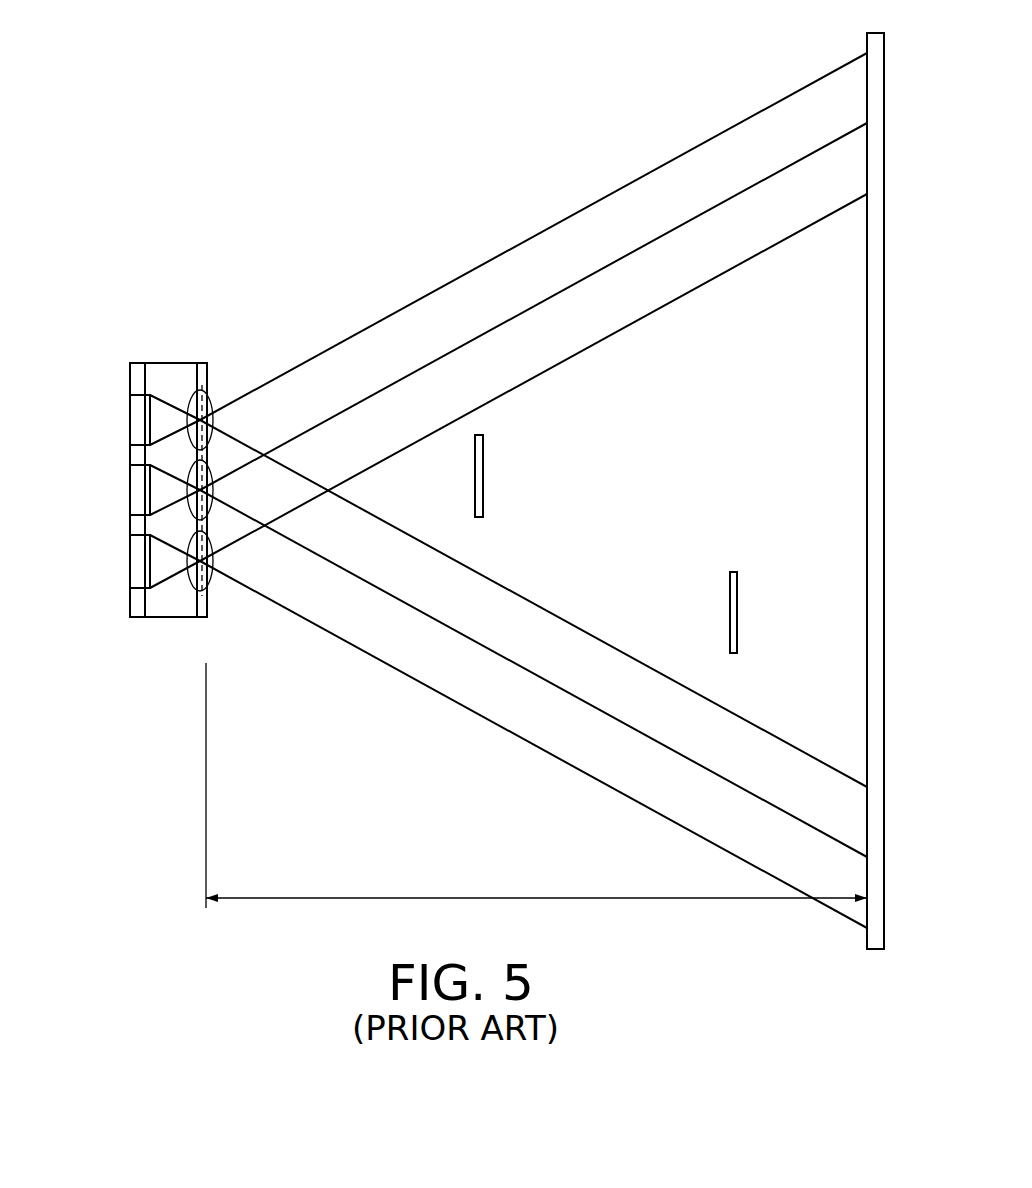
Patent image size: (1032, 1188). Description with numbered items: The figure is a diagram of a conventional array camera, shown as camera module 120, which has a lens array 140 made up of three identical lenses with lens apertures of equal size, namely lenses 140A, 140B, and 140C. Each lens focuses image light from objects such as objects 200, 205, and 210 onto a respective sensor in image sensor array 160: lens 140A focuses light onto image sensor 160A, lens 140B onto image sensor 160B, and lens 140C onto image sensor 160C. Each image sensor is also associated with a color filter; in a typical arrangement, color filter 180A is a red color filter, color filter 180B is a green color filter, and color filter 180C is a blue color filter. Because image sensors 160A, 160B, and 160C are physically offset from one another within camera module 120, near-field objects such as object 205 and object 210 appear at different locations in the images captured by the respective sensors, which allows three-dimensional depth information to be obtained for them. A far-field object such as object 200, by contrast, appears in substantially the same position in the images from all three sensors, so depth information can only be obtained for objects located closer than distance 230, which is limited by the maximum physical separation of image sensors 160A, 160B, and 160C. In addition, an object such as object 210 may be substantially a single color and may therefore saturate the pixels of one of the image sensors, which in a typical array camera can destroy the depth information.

The camera module 120 is at (170, 358).
The lens array 140 is at (202, 622).
The lens 140A is at (215, 437).
The lens 140B is at (215, 507).
The lens 140C is at (215, 577).
The image sensor array 160 is at (138, 622).
The image sensor 160A is at (135, 411).
The image sensor 160B is at (135, 481).
The image sensor 160C is at (135, 551).
The color filter 180A is at (148, 426).
The color filter 180B is at (148, 496).
The color filter 180C is at (148, 566).
The object 200 is at (867, 405).
The object 205 is at (483, 466).
The object 210 is at (730, 605).
The distance 230 is at (410, 895).